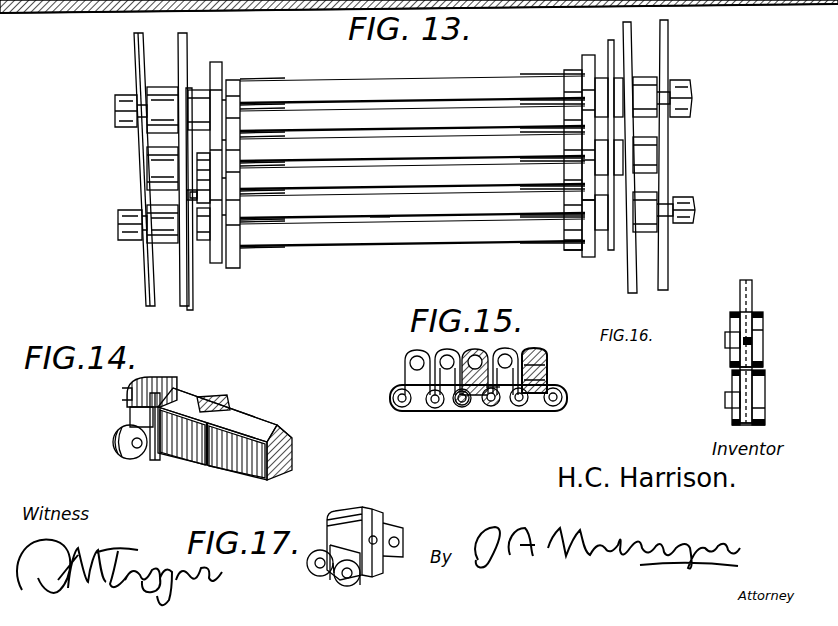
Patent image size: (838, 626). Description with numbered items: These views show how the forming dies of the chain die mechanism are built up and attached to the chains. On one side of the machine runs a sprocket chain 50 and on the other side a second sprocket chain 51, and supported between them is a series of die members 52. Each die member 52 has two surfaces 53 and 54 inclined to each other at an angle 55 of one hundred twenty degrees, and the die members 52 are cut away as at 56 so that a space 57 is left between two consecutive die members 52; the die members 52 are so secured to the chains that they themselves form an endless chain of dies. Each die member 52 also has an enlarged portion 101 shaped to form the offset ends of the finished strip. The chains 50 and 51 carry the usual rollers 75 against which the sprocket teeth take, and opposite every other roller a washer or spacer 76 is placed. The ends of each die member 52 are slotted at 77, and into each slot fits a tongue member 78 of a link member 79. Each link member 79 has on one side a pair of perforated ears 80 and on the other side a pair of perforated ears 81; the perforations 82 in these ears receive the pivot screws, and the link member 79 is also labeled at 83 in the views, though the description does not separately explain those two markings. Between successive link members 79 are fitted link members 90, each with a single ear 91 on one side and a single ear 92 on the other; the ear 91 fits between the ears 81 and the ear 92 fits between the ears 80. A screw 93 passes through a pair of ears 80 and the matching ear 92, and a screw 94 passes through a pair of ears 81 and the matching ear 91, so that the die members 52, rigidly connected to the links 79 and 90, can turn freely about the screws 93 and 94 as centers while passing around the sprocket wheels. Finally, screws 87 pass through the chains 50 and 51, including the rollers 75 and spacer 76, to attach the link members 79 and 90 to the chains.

In FIG. 13, the sprocket chain 50 is at (134, 48).
In FIG. 13, the second sprocket chain 51 is at (669, 56).
In FIG. 13, the die member 52 is at (416, 150).
In FIG. 14, the die member 52 is at (246, 465).
In FIG. 15, the die member 52 is at (550, 375).
In FIG. 14, the surface 53 is at (253, 427).
In FIG. 14, the surface 54 is at (284, 430).
In FIG. 14, the angle 55 is at (293, 448).
In FIG. 13, the cut away 56 is at (385, 265).
In FIG. 13, the space 57 is at (468, 110).
In FIG. 13, the roller 75 is at (163, 95).
In FIG. 13, the washer 76 is at (191, 92).
In FIG. 13, the slot 77 is at (568, 245).
In FIG. 14, the slot 77 is at (160, 445).
In FIG. 13, the tongue member 78 is at (252, 176).
In FIG. 14, the tongue member 78 is at (177, 395).
In FIG. 15, the tongue member 78 is at (406, 378).
In FIG. 16, the tongue member 78 is at (727, 340).
In FIG. 17, the tongue member 78 is at (378, 575).
In FIG. 13, the link member 79 is at (270, 109).
In FIG. 15, the link member 79 is at (406, 368).
In FIG. 16, the link member 79 is at (733, 325).
In FIG. 17, the link member 79 is at (346, 510).
In FIG. 13, the perforated ears 80 is at (272, 130).
In FIG. 15, the perforated ears 80 is at (400, 412).
In FIG. 16, the perforated ears 80 is at (733, 364).
In FIG. 17, the perforated ears 80 is at (340, 587).
In FIG. 13, the perforated ears 81 is at (130, 95).
In FIG. 15, the perforated ears 81 is at (565, 397).
In FIG. 16, the perforated ears 81 is at (738, 312).
In FIG. 17, the perforated ears 81 is at (397, 534).
In FIG. 15, the pivot hole 82 is at (418, 356).
In FIG. 13, the cap 83 is at (195, 195).
In FIG. 14, the cap 83 is at (128, 386).
In FIG. 13, the screw 87 is at (118, 222).
In FIG. 13, the link member 90 is at (234, 86).
In FIG. 14, the link member 90 is at (133, 414).
In FIG. 15, the link member 90 is at (446, 358).
In FIG. 16, the link member 90 is at (752, 300).
In FIG. 13, the ear 91 is at (239, 106).
In FIG. 15, the ear 91 is at (498, 410).
In FIG. 16, the ear 91 is at (755, 330).
In FIG. 13, the ear 92 is at (218, 88).
In FIG. 14, the ear 92 is at (125, 456).
In FIG. 15, the ear 92 is at (462, 412).
In FIG. 16, the ear 92 is at (746, 281).
In FIG. 13, the screw 93 is at (203, 150).
In FIG. 15, the screw 93 is at (470, 412).
In FIG. 13, the screw 94 is at (197, 176).
In FIG. 15, the screw 94 is at (420, 412).
In FIG. 13, the enlarged portion 101 is at (282, 80).
In FIG. 14, the enlarged portion 101 is at (212, 402).